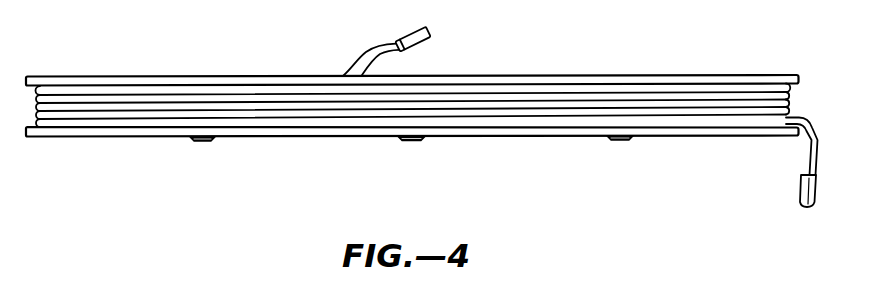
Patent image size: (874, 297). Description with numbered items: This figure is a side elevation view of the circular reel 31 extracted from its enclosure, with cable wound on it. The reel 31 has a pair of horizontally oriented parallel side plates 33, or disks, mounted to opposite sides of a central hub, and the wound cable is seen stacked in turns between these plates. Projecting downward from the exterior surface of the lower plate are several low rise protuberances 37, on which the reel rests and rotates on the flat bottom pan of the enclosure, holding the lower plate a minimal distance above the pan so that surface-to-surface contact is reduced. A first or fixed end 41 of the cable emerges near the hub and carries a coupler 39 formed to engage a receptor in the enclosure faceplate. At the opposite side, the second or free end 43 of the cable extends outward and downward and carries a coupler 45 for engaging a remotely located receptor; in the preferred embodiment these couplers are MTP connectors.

The circular reel 31 is at (80, 188).
The side plates 33 is at (641, 75).
The low rise protuberances 37 is at (413, 142).
The coupler 39 is at (431, 35).
The first or fixed end 41 is at (369, 58).
The second or free end 43 is at (816, 135).
The coupler 45 is at (800, 192).